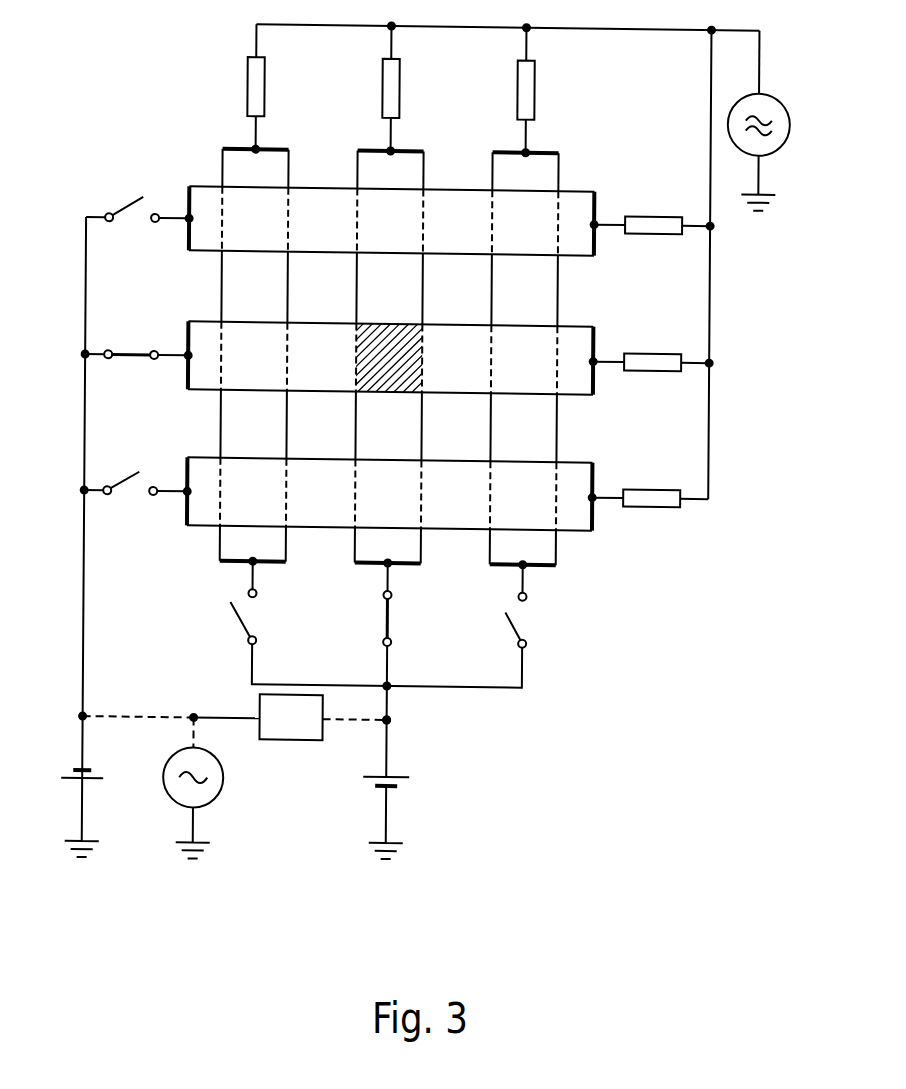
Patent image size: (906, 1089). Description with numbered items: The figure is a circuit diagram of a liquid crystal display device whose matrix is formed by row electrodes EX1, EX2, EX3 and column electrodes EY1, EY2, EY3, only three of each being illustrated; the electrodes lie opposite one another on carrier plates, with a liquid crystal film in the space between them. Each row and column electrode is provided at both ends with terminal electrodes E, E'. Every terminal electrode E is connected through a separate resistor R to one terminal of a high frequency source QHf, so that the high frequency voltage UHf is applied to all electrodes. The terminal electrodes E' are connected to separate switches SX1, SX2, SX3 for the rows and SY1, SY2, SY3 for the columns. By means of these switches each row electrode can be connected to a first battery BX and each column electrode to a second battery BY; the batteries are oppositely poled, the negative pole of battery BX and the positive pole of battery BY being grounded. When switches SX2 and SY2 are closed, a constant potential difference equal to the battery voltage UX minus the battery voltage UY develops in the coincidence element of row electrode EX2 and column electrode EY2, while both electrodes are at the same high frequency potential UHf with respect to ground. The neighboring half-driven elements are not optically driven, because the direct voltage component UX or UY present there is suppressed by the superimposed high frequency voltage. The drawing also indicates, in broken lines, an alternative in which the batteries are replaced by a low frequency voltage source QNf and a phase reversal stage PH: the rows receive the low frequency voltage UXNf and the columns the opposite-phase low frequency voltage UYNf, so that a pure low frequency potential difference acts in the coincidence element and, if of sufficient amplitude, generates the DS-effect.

The resistor R is at (464, 282).
The terminal electrode E is at (417, 322).
The terminal electrode E' is at (357, 390).
The column electrode EY1 is at (280, 168).
The column electrode EY2 is at (416, 167).
The column electrode EY3 is at (550, 165).
The row electrode EX1 is at (577, 250).
The row electrode EX2 is at (577, 388).
The row electrode EX3 is at (577, 526).
The switch SX1 is at (132, 230).
The switch SX2 is at (131, 378).
The switch SX3 is at (130, 507).
The switch SY1 is at (265, 620).
The switch SY2 is at (409, 621).
The switch SY3 is at (538, 622).
The high frequency voltage UHf is at (779, 64).
The high frequency source QHf is at (764, 152).
The low frequency voltage UXNf is at (225, 704).
The low frequency voltage UYNf is at (355, 705).
The phase reversal stage PH is at (291, 736).
The battery voltage UX is at (121, 737).
The first battery BX is at (100, 776).
The low frequency voltage source QNf is at (204, 788).
The battery voltage UY is at (367, 743).
The second battery BY is at (407, 804).